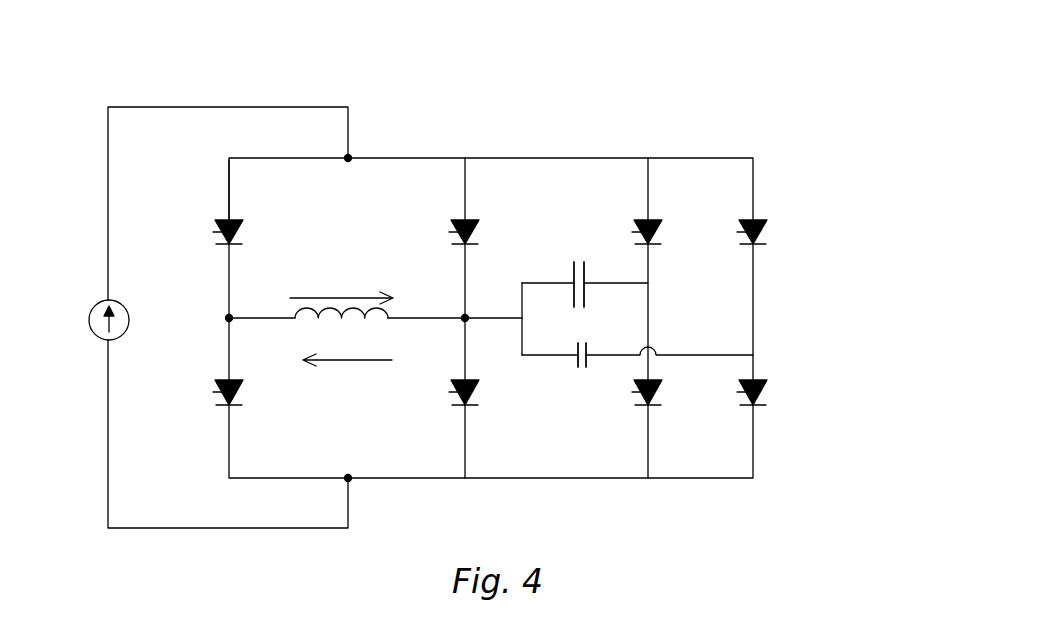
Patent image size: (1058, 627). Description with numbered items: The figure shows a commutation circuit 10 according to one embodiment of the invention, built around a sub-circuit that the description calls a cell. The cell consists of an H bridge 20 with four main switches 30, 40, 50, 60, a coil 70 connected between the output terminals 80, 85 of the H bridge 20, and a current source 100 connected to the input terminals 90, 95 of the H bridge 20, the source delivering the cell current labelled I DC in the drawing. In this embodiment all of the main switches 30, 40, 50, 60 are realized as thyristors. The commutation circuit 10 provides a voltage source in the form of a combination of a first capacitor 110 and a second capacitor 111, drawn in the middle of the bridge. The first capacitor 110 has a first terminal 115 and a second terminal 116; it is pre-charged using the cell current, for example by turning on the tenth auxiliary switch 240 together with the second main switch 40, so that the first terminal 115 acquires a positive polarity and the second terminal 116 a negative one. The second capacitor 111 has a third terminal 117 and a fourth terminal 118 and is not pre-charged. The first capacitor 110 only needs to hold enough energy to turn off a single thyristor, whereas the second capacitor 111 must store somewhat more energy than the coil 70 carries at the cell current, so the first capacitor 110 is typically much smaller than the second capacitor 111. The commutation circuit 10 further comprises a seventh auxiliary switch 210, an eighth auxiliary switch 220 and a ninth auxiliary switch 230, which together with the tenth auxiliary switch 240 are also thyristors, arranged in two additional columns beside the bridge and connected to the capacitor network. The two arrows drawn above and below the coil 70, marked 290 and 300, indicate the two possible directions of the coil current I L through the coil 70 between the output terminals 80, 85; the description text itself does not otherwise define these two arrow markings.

The commutation circuit 10 is at (696, 100).
The H bridge 20 is at (228, 175).
The main switch 30 is at (243, 226).
The second main switch 40 is at (450, 388).
The main switch 50 is at (452, 224).
The main switch 60 is at (243, 386).
The coil 70 is at (348, 310).
The output terminal 80 is at (230, 320).
The output terminal 85 is at (464, 320).
The input terminal 90 is at (346, 157).
The input terminal 95 is at (346, 480).
The current source 100 is at (88, 318).
The first capacitor 110 is at (603, 372).
The second capacitor 111 is at (604, 263).
The first terminal 115 is at (612, 333).
The second terminal 116 is at (576, 348).
The third terminal 117 is at (586, 290).
The fourth terminal 118 is at (572, 292).
The seventh auxiliary switch 210 is at (765, 388).
The eighth auxiliary switch 220 is at (660, 388).
The ninth auxiliary switch 230 is at (660, 228).
The tenth auxiliary switch 240 is at (765, 228).
The forward current direction 290 is at (304, 298).
The reverse current direction 300 is at (370, 361).